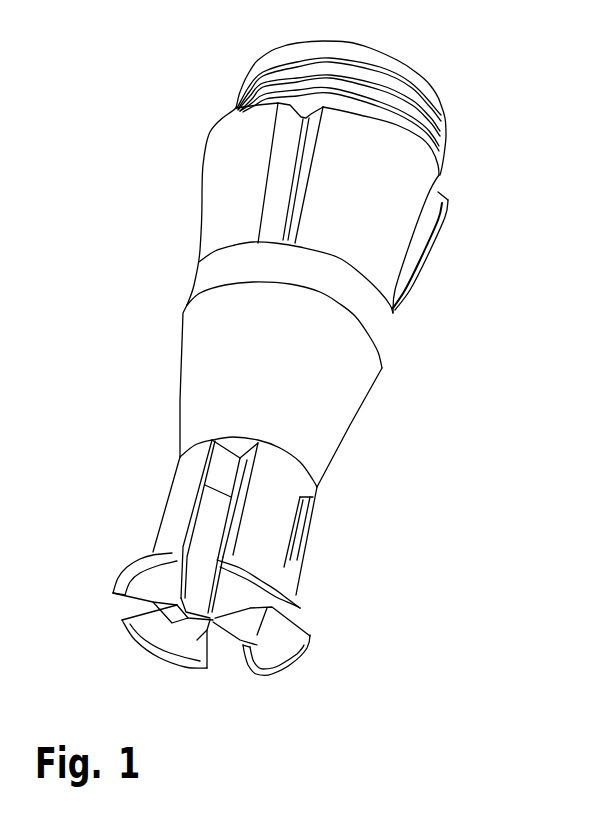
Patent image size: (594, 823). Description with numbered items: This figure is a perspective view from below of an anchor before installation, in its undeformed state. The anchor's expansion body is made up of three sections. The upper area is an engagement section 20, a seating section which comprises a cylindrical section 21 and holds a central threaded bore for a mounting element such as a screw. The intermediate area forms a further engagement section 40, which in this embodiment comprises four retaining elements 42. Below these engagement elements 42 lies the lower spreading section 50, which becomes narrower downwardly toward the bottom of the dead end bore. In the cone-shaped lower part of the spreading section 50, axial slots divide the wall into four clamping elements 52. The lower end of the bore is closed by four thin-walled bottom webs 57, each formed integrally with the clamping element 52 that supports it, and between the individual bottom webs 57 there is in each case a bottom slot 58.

The engagement section 20 is at (402, 107).
The cylindrical section 21 is at (527, 95).
The retaining element 42 is at (530, 262).
The engagement section 40 is at (530, 298).
The spreading section 50 is at (360, 459).
The clamping element 52 is at (525, 578).
The bottom web 57 is at (525, 652).
The bottom slot 58 is at (525, 688).